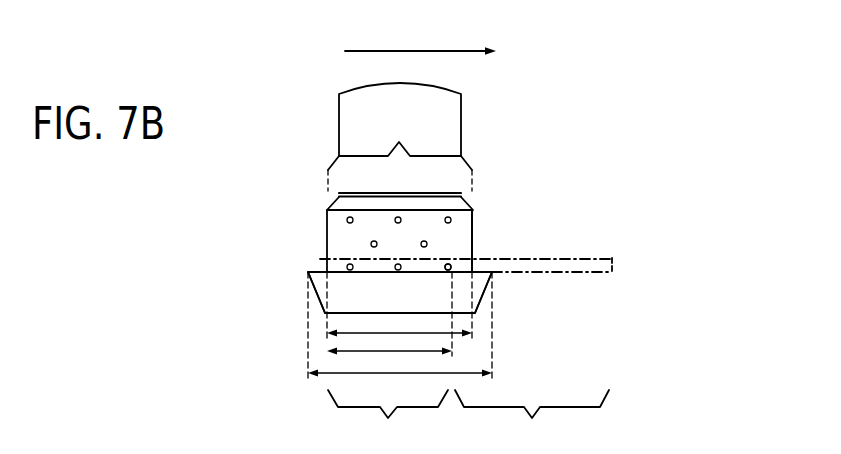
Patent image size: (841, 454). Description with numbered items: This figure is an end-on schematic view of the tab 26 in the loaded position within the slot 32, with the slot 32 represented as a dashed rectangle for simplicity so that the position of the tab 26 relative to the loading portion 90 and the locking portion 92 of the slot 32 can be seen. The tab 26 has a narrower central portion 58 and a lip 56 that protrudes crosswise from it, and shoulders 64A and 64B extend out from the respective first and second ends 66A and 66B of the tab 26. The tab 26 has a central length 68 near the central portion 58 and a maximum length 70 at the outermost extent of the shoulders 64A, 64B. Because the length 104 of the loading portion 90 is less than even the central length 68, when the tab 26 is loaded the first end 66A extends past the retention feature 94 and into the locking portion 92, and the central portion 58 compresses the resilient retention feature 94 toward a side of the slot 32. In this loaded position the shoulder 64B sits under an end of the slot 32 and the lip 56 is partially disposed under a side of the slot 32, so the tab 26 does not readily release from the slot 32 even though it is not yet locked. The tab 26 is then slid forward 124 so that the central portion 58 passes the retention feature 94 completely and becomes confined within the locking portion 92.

The forward sliding direction 124 is at (413, 50).
The central portion 58 is at (400, 119).
The tab 26 is at (339, 203).
The second end 66B is at (316, 245).
The first end 66A is at (483, 247).
The retention feature 94 is at (452, 253).
The slot 32 is at (604, 290).
The lip 56 is at (413, 303).
The shoulder 64B is at (298, 285).
The shoulder 64A is at (504, 288).
The central length 68 is at (440, 333).
The length of the loading portion 104 is at (388, 352).
The maximum length 70 is at (397, 376).
The loading portion 90 is at (388, 420).
The locking portion 92 is at (532, 420).